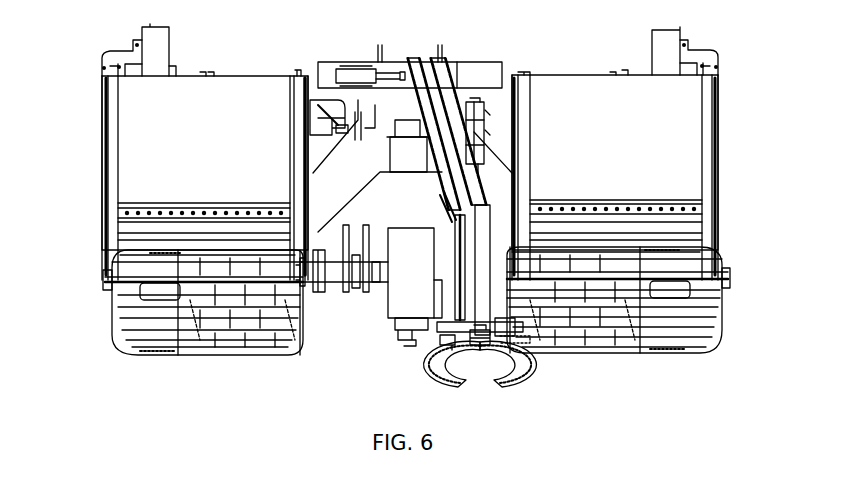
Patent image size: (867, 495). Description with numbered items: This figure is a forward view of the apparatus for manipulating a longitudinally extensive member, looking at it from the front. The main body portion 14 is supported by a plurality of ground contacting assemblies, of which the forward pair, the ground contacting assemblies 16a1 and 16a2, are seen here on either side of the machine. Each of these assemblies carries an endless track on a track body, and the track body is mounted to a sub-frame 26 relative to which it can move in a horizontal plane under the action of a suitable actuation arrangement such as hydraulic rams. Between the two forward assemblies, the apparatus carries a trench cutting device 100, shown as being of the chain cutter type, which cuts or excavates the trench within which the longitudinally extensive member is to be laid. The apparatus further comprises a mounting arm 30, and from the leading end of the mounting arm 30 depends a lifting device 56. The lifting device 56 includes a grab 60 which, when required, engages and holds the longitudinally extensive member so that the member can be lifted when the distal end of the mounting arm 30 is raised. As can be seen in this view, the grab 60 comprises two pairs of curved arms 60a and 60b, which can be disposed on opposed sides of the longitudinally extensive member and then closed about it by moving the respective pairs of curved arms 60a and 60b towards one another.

The main body portion 14 is at (473, 74).
The sub-frame 26 is at (100, 149).
The mounting arm 30 is at (433, 165).
The trench cutting device 100 is at (405, 295).
The ground contacting assembly 16a1 is at (120, 335).
The ground contacting assembly 16a2 is at (722, 289).
The grab 60 is at (477, 386).
The curved arms 60a is at (523, 362).
The curved arms 60b is at (437, 366).
The lifting device 56 is at (522, 380).